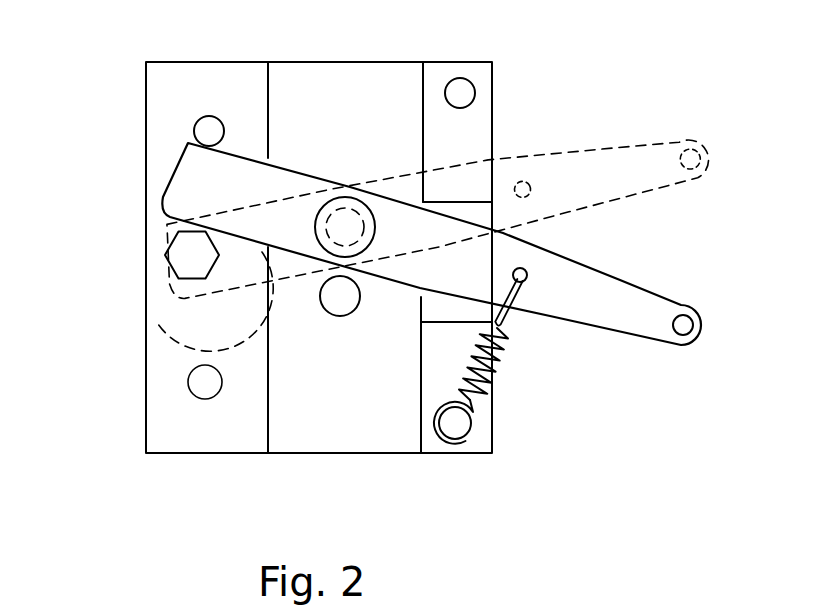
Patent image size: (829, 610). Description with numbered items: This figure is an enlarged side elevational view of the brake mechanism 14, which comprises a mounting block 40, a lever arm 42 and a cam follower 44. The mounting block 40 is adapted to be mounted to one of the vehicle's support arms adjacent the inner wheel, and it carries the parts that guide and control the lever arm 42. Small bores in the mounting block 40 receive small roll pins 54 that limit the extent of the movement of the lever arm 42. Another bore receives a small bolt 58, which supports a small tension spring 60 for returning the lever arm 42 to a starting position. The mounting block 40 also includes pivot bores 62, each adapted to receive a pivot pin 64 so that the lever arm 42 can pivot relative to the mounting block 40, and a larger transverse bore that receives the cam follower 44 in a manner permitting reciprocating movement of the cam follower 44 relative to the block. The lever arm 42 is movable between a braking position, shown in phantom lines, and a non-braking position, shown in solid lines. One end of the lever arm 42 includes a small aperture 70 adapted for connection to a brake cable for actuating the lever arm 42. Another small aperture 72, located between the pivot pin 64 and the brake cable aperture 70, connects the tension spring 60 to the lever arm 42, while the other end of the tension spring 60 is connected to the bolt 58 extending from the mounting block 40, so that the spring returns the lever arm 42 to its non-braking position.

The brake mechanism 14 is at (548, 121).
The mounting block 40 is at (362, 75).
The lever arm 42 is at (578, 275).
The cam follower 44 is at (145, 320).
The roll pins 54 is at (203, 118).
The bolt 58 is at (457, 423).
The tension spring 60 is at (497, 358).
The pivot bores 62 is at (333, 292).
The pivot pin 64 is at (352, 217).
The aperture 70 is at (684, 315).
The aperture 72 is at (530, 277).